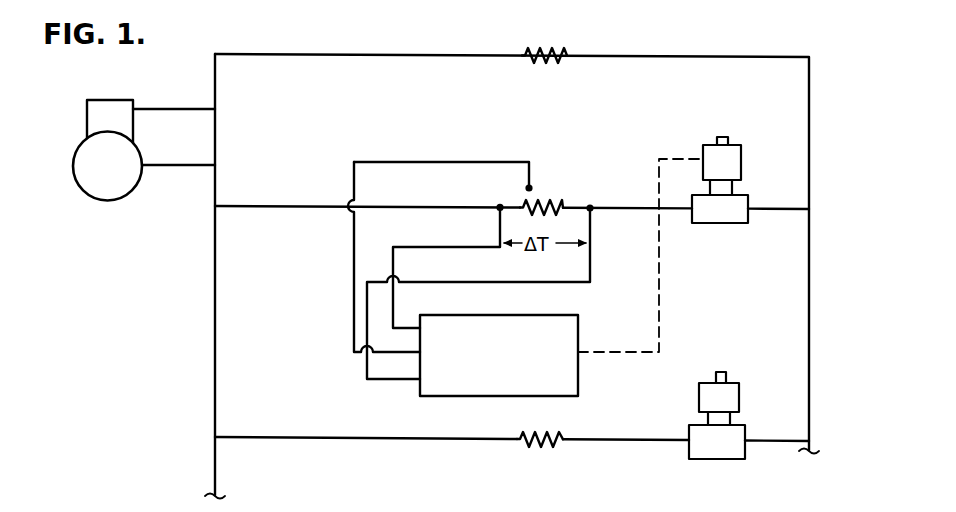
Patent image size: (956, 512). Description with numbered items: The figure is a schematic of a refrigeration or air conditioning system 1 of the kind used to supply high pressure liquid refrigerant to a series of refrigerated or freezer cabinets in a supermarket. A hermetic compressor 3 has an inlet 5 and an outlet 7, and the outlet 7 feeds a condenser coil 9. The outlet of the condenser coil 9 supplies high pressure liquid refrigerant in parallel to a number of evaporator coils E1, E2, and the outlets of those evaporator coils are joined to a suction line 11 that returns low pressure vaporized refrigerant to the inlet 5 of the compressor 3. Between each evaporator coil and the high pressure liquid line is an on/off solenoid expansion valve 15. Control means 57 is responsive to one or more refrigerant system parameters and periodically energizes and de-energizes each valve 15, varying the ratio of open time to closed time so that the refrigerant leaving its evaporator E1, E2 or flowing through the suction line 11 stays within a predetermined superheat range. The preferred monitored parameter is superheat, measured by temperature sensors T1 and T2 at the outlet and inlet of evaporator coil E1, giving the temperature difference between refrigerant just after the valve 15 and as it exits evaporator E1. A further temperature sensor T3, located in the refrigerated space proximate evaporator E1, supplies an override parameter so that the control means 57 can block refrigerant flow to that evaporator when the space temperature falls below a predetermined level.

The refrigeration system 1 is at (768, 42).
The hermetic compressor 3 is at (134, 198).
The inlet 5 is at (143, 167).
The outlet 7 is at (134, 108).
The condenser coil 9 is at (557, 44).
The suction line 11 is at (400, 206).
The on/off solenoid expansion valve 15 is at (758, 170).
The control means 57 is at (420, 398).
The evaporator coil E1 is at (560, 191).
The evaporator coil E2 is at (549, 430).
The temperature sensor T1 is at (498, 210).
The temperature sensor T2 is at (591, 213).
The temperature sensor T3 is at (530, 186).